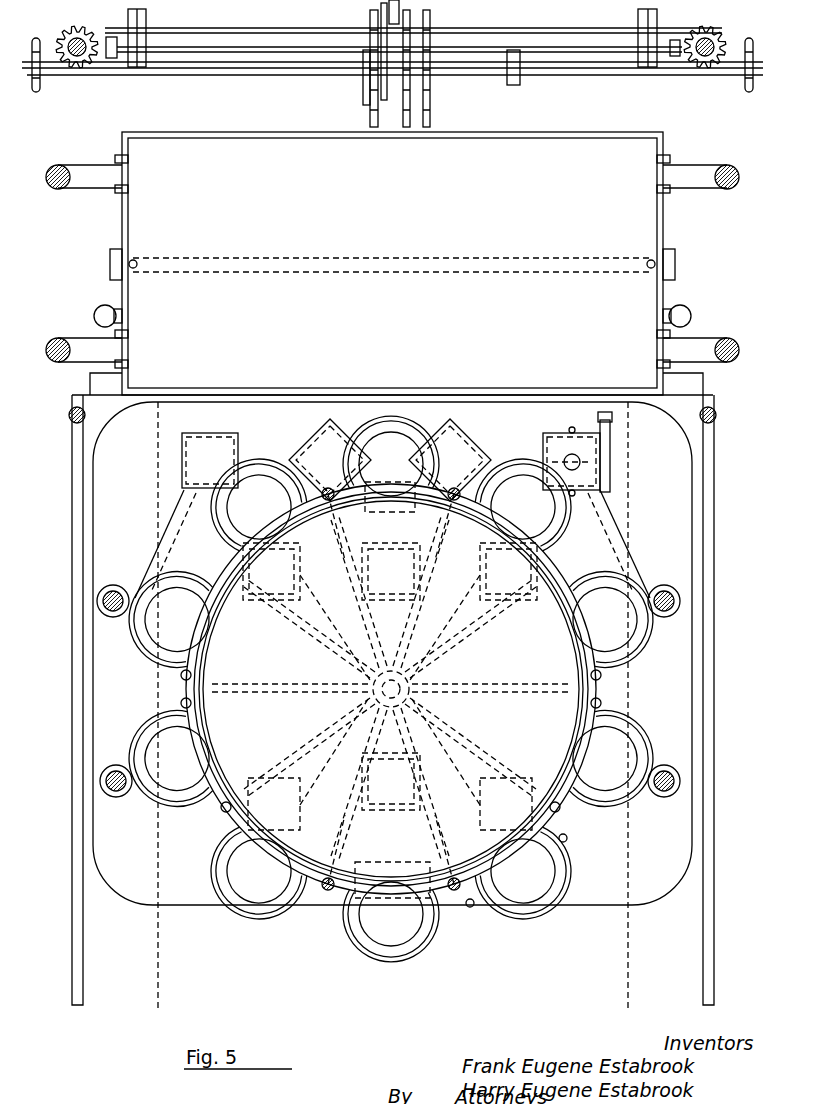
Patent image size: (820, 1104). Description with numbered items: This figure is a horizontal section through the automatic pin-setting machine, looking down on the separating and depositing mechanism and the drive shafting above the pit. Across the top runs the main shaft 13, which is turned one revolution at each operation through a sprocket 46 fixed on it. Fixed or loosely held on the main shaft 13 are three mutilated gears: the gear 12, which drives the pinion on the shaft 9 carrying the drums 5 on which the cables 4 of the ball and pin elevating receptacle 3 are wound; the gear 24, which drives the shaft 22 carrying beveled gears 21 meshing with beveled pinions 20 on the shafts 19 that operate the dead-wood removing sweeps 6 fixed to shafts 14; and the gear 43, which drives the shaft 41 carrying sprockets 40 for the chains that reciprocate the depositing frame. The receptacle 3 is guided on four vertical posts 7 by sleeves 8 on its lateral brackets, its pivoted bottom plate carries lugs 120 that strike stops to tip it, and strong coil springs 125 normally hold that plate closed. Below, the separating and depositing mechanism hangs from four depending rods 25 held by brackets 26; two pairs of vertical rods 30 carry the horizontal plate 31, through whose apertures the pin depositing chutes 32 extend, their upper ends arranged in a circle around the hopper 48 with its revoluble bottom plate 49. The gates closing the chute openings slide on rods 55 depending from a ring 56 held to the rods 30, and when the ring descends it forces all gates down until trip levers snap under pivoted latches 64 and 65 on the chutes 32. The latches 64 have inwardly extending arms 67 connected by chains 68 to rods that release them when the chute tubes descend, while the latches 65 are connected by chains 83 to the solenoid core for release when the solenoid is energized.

The ball and pin elevating receptacle 3 is at (392, 263).
The cables 4 is at (136, 262).
The drums 5 is at (146, 20).
The dead-wood removing sweeps 6 is at (72, 912).
The vertical posts 7 is at (48, 185).
The sleeves 8 is at (48, 170).
The shaft 9 is at (294, 30).
The mutilated gear 12 is at (370, 122).
The main shaft 13 is at (220, 75).
The shafts 14 is at (68, 413).
The shafts 19 is at (70, 40).
The beveled pinions 20 is at (110, 37).
The beveled gears 21 is at (58, 40).
The shaft 22 is at (236, 47).
The mutilated gear 24 is at (415, 127).
The vertically depending rods 25 is at (113, 591).
The brackets 26 is at (148, 590).
The vertical rods 30 is at (326, 488).
The horizontal plate 31 is at (132, 893).
The pin depositing chutes 32 is at (265, 460).
The sprockets 40 is at (36, 90).
The shaft 41 is at (74, 70).
The mutilated gear 43 is at (430, 106).
The sprocket 46 is at (513, 85).
The hopper 48 is at (380, 668).
The revoluble bottom plate 49 is at (218, 690).
The rods 55 is at (566, 841).
The ring 56 is at (222, 812).
The latches 64 is at (270, 725).
The latches 65 is at (270, 755).
The inwardly extending arms 67 is at (233, 708).
The chains 68 is at (275, 650).
The chains 83 is at (322, 670).
The lugs 120 is at (98, 382).
The coil springs 125 is at (94, 314).